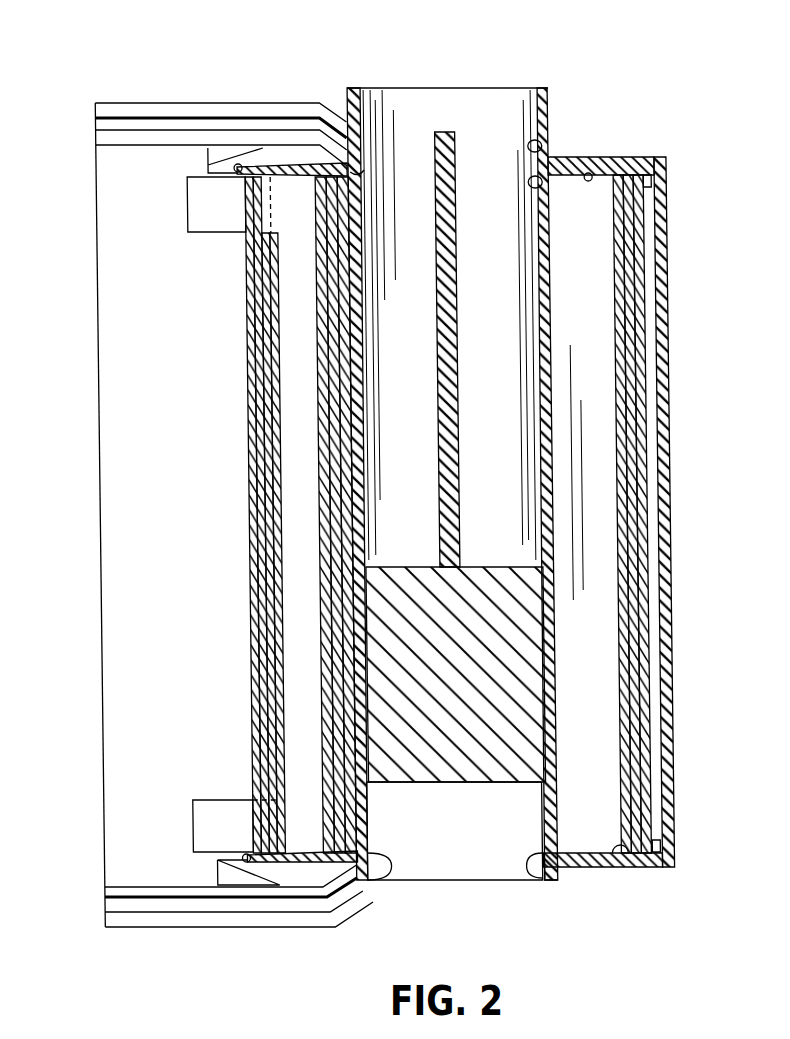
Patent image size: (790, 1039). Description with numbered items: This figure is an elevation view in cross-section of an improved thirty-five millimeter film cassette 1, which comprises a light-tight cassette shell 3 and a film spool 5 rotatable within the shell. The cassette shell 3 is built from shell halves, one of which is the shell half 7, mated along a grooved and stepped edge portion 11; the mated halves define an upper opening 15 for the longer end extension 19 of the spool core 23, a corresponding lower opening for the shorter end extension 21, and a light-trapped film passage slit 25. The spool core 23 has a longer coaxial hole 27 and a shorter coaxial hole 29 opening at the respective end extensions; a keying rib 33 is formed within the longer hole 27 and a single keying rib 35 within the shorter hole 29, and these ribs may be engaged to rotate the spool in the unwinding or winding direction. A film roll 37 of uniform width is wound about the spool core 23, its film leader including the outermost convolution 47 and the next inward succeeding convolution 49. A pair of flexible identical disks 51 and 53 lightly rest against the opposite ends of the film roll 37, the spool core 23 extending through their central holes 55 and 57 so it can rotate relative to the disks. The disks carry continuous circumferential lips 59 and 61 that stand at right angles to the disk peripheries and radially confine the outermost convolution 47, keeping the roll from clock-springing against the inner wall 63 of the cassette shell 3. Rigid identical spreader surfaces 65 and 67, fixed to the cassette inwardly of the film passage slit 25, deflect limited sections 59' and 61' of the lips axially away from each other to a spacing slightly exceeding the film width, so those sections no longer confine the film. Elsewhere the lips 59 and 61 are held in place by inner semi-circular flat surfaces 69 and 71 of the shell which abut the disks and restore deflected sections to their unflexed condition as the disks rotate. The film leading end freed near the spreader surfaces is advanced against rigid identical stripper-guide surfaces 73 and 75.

The film cassette 1 is at (176, 85).
The cassette shell 3 is at (682, 800).
The film spool 5 is at (231, 500).
The shell half 7 is at (224, 102).
The grooved and stepped edge portion 11 is at (99, 125).
The upper opening 15 is at (546, 138).
The longer end extension 19 is at (547, 90).
The shorter end extension 21 is at (542, 880).
The spool core 23 is at (486, 565).
The film passage slit 25 is at (126, 300).
The longer coaxial hole 27 is at (420, 100).
The shorter coaxial hole 29 is at (417, 853).
The keying rib 33 is at (454, 160).
The keying rib 35 is at (480, 785).
The film roll 37 is at (243, 336).
The outermost convolution 47 is at (243, 382).
The next inward succeeding convolution 49 is at (243, 430).
The flexible disk 51 is at (292, 168).
The flexible disk 53 is at (300, 863).
The central hole 55 is at (350, 173).
The central hole 57 is at (371, 880).
The circumferential lip 59 is at (686, 182).
The deflected lip section 59' is at (206, 161).
The circumferential lip 61 is at (700, 840).
The deflected lip section 61' is at (216, 869).
The inner wall 63 is at (651, 345).
The spreader surface 65 is at (185, 188).
The spreader surface 67 is at (183, 850).
The semi-circular flat surface 69 is at (590, 172).
The semi-circular flat surface 71 is at (603, 856).
The stripper-guide surface 73 is at (213, 800).
The stripper-guide surface 75 is at (209, 232).